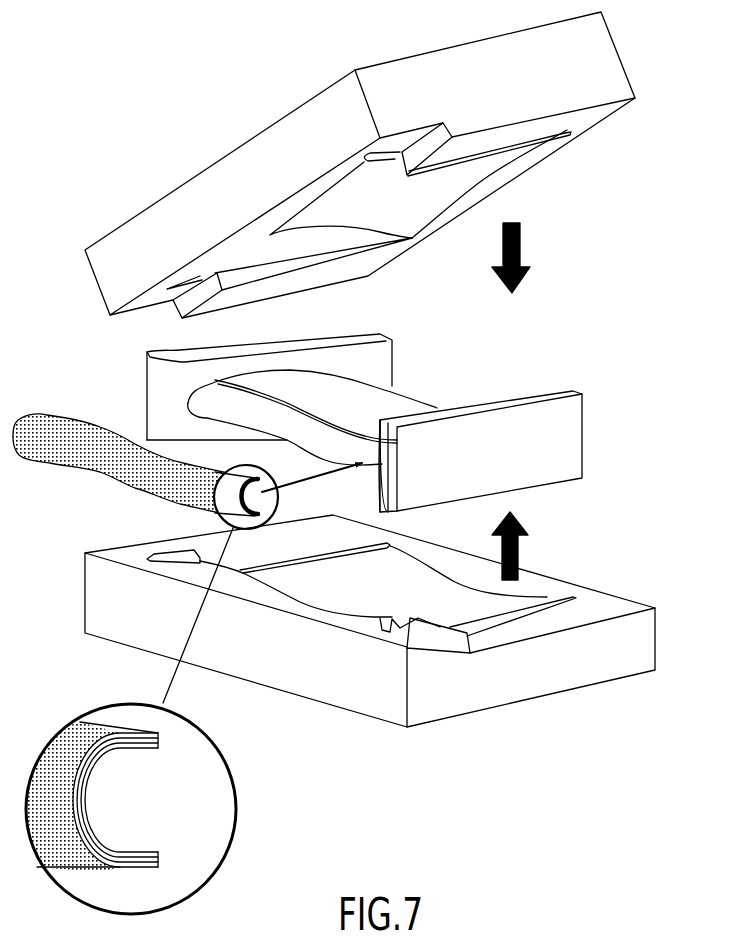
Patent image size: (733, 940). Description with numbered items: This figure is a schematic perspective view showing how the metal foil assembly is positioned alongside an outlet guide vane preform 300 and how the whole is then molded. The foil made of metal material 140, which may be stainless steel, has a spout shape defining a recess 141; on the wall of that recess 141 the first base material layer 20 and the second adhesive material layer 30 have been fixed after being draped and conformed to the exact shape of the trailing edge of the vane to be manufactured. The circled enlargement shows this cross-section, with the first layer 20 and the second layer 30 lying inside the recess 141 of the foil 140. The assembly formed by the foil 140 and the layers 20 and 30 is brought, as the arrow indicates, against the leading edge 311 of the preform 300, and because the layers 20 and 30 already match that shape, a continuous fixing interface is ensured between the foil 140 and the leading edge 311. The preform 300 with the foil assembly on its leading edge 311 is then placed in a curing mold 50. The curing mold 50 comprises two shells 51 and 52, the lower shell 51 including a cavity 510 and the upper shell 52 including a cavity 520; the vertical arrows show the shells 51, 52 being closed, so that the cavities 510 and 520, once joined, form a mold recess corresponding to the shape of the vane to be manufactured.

The curing mold 50 is at (233, 110).
The shell 52 is at (612, 50).
The shell 51 is at (648, 642).
The cavity 520 is at (423, 195).
The cavity 510 is at (432, 593).
The outlet guide vane preform 300 is at (453, 388).
The leading edge 311 is at (200, 402).
The foil made of metal material 140 is at (110, 480).
The recess 141 is at (140, 818).
The first base material layer 20 is at (133, 755).
The second adhesive material layer 30 is at (160, 853).